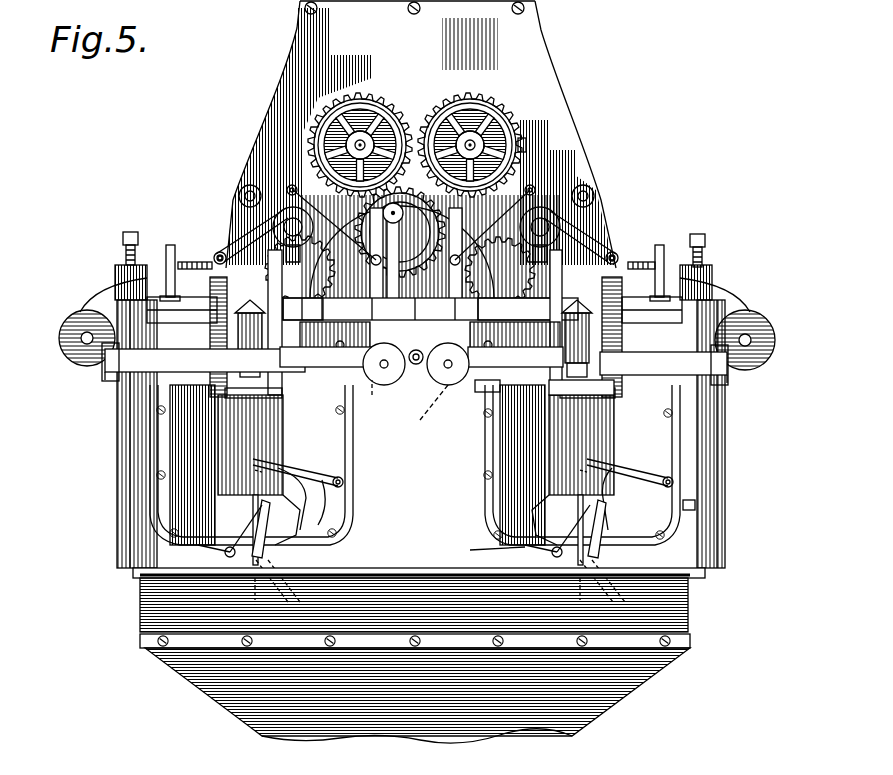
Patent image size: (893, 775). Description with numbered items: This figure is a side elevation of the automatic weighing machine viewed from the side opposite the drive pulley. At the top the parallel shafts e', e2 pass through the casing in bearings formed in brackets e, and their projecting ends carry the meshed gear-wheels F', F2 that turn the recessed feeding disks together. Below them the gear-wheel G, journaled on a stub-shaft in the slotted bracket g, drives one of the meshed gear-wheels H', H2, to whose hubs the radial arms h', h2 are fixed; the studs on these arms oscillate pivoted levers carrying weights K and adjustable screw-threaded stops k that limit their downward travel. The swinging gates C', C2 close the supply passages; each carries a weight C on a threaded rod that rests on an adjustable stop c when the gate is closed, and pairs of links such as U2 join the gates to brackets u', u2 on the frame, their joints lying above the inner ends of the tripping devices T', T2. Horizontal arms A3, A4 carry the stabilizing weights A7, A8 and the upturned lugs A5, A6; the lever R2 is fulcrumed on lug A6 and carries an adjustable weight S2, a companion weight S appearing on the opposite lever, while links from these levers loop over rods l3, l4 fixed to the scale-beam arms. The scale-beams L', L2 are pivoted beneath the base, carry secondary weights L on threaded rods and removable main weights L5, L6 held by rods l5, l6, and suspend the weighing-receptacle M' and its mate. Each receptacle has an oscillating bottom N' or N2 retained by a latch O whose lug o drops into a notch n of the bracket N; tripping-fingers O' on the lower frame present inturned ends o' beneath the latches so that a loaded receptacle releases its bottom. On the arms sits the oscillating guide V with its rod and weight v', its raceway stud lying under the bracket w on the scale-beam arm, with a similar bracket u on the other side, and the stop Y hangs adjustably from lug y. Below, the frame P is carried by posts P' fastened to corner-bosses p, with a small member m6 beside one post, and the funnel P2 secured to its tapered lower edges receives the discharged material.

The gear-wheel F' is at (360, 125).
The gear-wheel F2 is at (482, 96).
The shaft e' is at (381, 116).
The shaft e2 is at (472, 143).
The bracket e is at (538, 135).
The gear-wheel G is at (414, 232).
The bracket g is at (393, 251).
The lug A6 is at (489, 245).
The radial arm h' is at (338, 245).
The lever R2 is at (553, 234).
The swinging gate C' is at (246, 217).
The small pulley S is at (243, 188).
The weight v' is at (278, 168).
The weight S2 is at (590, 190).
The pair of links U2 is at (536, 188).
The lug A5 is at (251, 237).
The swinging gate C2 is at (606, 222).
The lug y is at (216, 254).
The screw-threaded stop k is at (122, 240).
The weight C is at (422, 255).
The adjustable stop c is at (170, 290).
The weight K is at (72, 352).
The oscillating guide V is at (414, 314).
The stop Y is at (238, 300).
The gear-wheel H' is at (430, 309).
The gear-wheel H2 is at (427, 309).
The bracket u' is at (310, 309).
The bracket u2 is at (519, 309).
The arm A3 is at (273, 397).
The rod l3 is at (277, 378).
The slide block u is at (250, 338).
The bracket w is at (577, 338).
The main weight L5 is at (225, 350).
The main weight L6 is at (620, 360).
The tripping device T' is at (330, 358).
The tripping device T2 is at (515, 358).
The radial arm h2 is at (416, 365).
The secondary weight L is at (426, 408).
The scale-beam L' is at (97, 395).
The scale-beam L2 is at (705, 387).
The post P' is at (412, 465).
The weight A7 is at (212, 440).
The weight A8 is at (552, 460).
The bolt or rod l5 is at (250, 445).
The bolt or rod l6 is at (581, 445).
The rod l4 is at (548, 386).
The arm A4 is at (490, 425).
The lug o is at (446, 494).
The inwardly-projecting end o' is at (404, 470).
The latch O is at (463, 461).
The notch n is at (348, 476).
The weighing-receptacle M' is at (416, 510).
The oscillating bottom N' is at (231, 555).
The bracket N is at (611, 529).
The tripping-finger O' is at (418, 533).
The oscillating bottom N2 is at (483, 539).
The stop m6 is at (695, 506).
The corner-boss p is at (720, 572).
The frame P is at (433, 605).
The funnel P2 is at (526, 728).